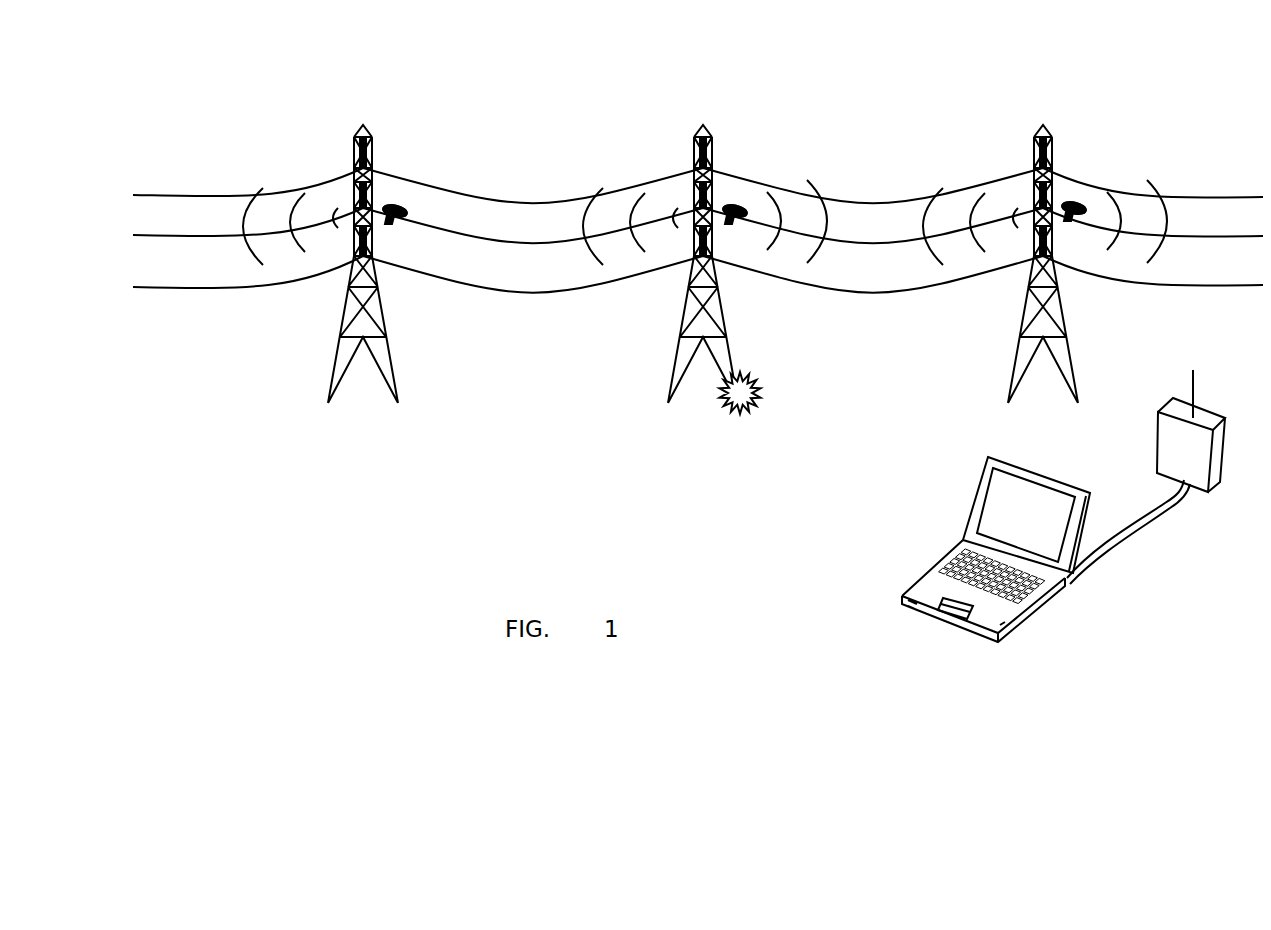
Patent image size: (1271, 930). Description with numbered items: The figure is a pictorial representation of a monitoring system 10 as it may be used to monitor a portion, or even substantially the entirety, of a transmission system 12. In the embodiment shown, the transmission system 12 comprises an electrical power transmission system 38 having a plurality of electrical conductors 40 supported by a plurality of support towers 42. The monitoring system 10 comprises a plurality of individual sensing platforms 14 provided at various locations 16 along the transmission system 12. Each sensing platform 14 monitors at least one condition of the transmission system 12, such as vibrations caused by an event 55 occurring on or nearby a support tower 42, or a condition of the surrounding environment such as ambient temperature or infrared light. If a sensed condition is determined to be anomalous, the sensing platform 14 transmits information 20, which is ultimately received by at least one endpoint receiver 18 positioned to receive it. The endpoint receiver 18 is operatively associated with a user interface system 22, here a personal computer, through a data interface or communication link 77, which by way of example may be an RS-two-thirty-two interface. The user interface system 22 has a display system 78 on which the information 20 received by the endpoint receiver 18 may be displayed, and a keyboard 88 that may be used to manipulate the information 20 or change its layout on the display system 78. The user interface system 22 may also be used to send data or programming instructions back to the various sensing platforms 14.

The monitoring system 10 is at (190, 110).
The transmission system 12 is at (698, 262).
The sensing platform 14 is at (769, 260).
The location 16 is at (772, 181).
The endpoint receiver 18 is at (1222, 408).
The information 20 is at (731, 188).
The user interface system 22 is at (942, 554).
The electrical power transmission system 38 is at (215, 188).
The electrical conductors 40 is at (222, 287).
The support tower 42 is at (680, 264).
The event 55 is at (757, 380).
The communication link 77 is at (1138, 518).
The display system 78 is at (982, 507).
The keyboard 88 is at (1030, 593).